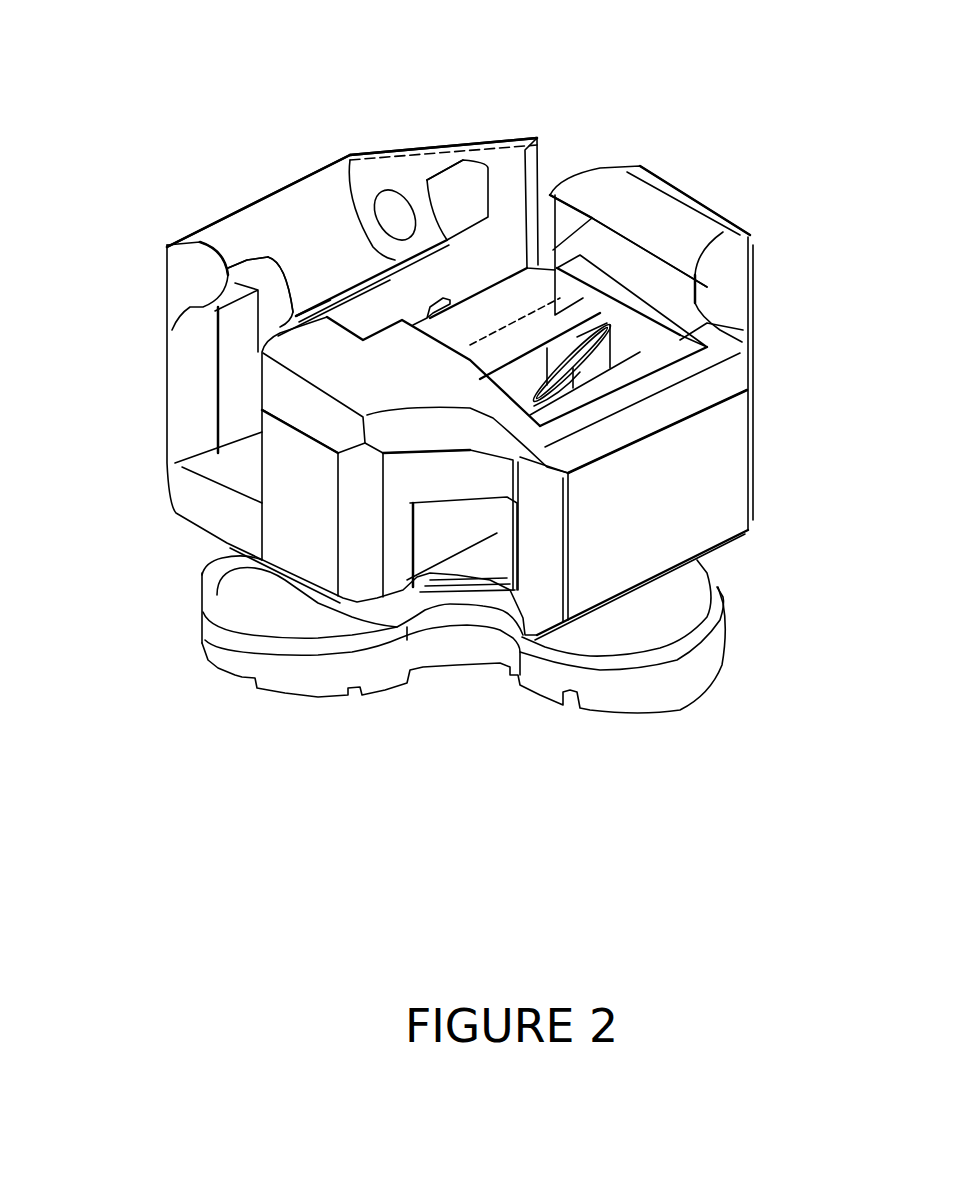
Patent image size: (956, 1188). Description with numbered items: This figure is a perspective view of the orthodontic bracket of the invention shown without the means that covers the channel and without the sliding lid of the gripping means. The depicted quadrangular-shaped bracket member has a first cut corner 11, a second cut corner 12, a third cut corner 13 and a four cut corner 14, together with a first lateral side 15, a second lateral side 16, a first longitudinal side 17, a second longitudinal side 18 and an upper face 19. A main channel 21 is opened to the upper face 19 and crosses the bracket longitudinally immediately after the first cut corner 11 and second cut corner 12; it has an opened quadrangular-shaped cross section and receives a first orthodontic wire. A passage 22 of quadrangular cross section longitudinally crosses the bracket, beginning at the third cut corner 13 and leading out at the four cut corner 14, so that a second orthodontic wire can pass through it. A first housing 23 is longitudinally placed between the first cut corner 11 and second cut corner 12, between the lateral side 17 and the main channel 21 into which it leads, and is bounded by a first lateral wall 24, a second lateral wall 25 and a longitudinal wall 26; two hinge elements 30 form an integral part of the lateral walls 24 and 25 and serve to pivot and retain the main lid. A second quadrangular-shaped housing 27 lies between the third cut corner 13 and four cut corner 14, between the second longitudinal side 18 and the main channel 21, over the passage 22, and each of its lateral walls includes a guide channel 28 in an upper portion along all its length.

The first cut corner 11 is at (200, 292).
The second cut corner 12 is at (460, 135).
The third cut corner 13 is at (718, 290).
The four cut corner 14 is at (433, 437).
The first lateral side 15 is at (313, 490).
The second lateral side 16 is at (705, 198).
The first longitudinal side 17 is at (250, 203).
The second longitudinal side 18 is at (638, 505).
The upper face 19 is at (630, 233).
The main channel 21 is at (247, 458).
The passage 22 is at (500, 553).
The first housing 23 is at (304, 279).
The first lateral wall 24 is at (247, 258).
The second lateral wall 25 is at (420, 197).
The longitudinal wall 26 is at (333, 227).
The second quadrangular-shaped housing 27 is at (529, 340).
The guide channel 28 is at (638, 330).
The hinge elements 30 is at (388, 210).